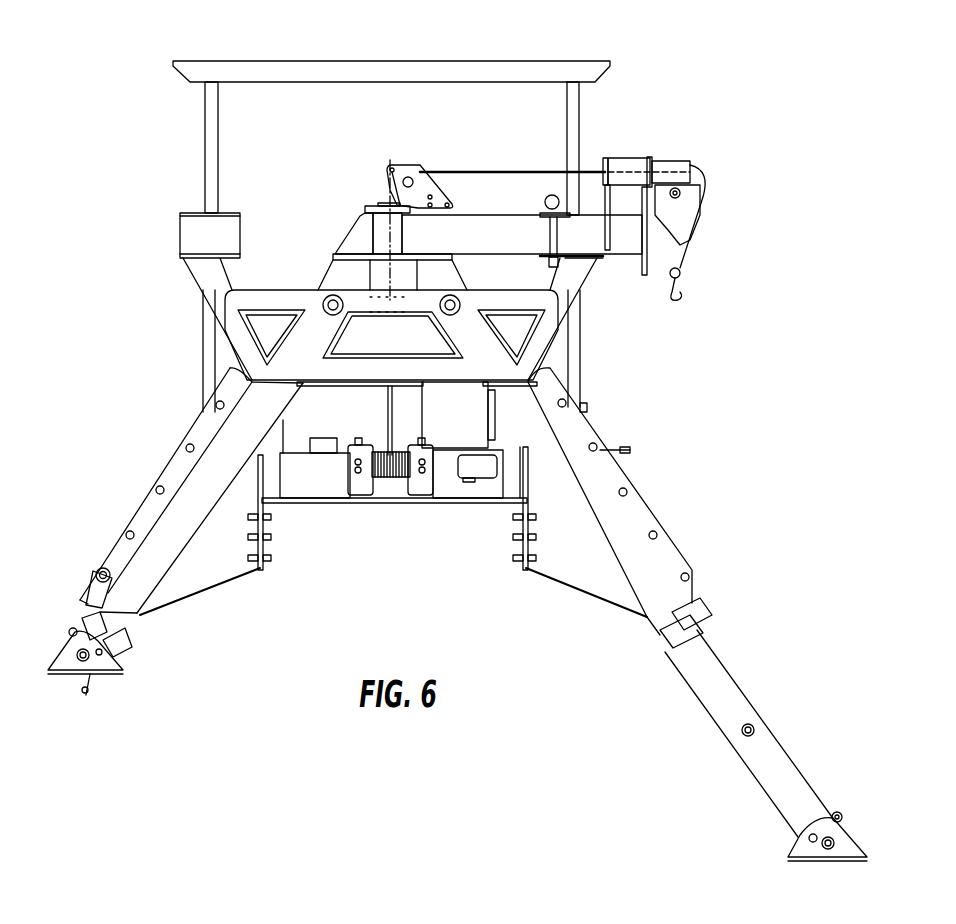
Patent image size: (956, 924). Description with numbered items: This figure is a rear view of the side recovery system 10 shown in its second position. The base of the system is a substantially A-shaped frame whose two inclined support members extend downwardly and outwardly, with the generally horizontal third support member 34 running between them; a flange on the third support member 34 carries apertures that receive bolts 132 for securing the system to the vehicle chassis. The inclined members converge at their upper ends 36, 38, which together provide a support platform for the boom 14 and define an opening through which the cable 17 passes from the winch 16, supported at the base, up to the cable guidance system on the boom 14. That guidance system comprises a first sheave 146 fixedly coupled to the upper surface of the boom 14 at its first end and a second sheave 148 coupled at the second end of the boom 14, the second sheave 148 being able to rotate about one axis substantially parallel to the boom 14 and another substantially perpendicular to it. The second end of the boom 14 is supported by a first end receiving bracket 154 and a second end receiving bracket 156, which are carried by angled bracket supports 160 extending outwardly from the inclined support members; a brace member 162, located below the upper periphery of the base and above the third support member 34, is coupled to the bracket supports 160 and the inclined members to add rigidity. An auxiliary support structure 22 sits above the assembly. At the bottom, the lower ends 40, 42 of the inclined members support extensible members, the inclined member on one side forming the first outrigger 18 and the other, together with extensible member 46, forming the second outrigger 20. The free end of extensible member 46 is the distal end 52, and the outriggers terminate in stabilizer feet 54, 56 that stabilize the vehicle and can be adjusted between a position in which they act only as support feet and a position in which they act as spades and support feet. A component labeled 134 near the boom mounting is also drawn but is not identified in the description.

The side recovery system 10 is at (773, 213).
The boom 14 is at (502, 230).
The winch 16 is at (388, 480).
The cable 17 is at (547, 167).
The first outrigger 18 is at (112, 512).
The second outrigger 20 is at (723, 587).
The auxiliary support structure 22 is at (243, 67).
The third support member 34 is at (468, 503).
The upper end 36 is at (342, 273).
The upper end 38 is at (445, 277).
The lower end 40 is at (125, 622).
The lower end 42 is at (653, 593).
The extensible member 46 is at (732, 698).
The distal end 52 is at (808, 812).
The stabilizer foot 54 is at (60, 662).
The stabilizer foot 56 is at (855, 837).
The bolts 132 is at (273, 557).
The column 134 is at (362, 240).
The first sheave 146 is at (407, 163).
The second sheave 148 is at (690, 198).
The first end receiving bracket 154 is at (195, 235).
The second end receiving bracket 156 is at (612, 262).
The bracket supports 160 is at (208, 278).
The brace member 162 is at (278, 300).